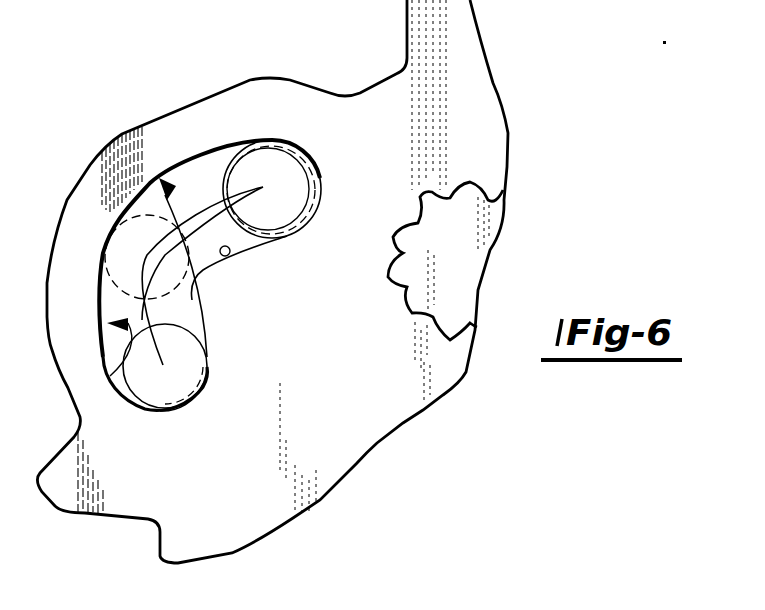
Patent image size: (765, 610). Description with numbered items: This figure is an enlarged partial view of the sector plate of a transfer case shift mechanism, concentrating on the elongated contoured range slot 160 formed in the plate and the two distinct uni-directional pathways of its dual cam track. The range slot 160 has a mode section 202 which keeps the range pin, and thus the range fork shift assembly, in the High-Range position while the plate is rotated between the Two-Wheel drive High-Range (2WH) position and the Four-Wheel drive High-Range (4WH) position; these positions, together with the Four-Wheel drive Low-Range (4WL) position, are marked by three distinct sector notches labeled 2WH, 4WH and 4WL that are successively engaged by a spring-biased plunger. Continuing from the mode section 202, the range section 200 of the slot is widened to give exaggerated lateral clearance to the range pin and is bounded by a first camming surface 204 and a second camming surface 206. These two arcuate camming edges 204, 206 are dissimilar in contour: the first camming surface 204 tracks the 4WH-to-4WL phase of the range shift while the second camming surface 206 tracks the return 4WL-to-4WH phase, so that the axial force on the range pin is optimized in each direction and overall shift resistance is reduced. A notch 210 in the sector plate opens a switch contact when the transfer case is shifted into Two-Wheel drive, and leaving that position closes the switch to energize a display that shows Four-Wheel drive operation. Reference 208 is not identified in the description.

The contoured range slot 160 is at (150, 312).
The range section 200 is at (207, 280).
The mode section 202 is at (123, 370).
The first camming surface 204 is at (190, 181).
The second camming surface 206 is at (228, 256).
The shift rail 208 is at (207, 197).
The notch 210 is at (279, 232).
The Two-Wheel drive High-Range position 2WH is at (180, 373).
The Four-Wheel drive High-Range position 4WH is at (152, 230).
The Four-Wheel drive Low-Range position 4WL is at (297, 176).